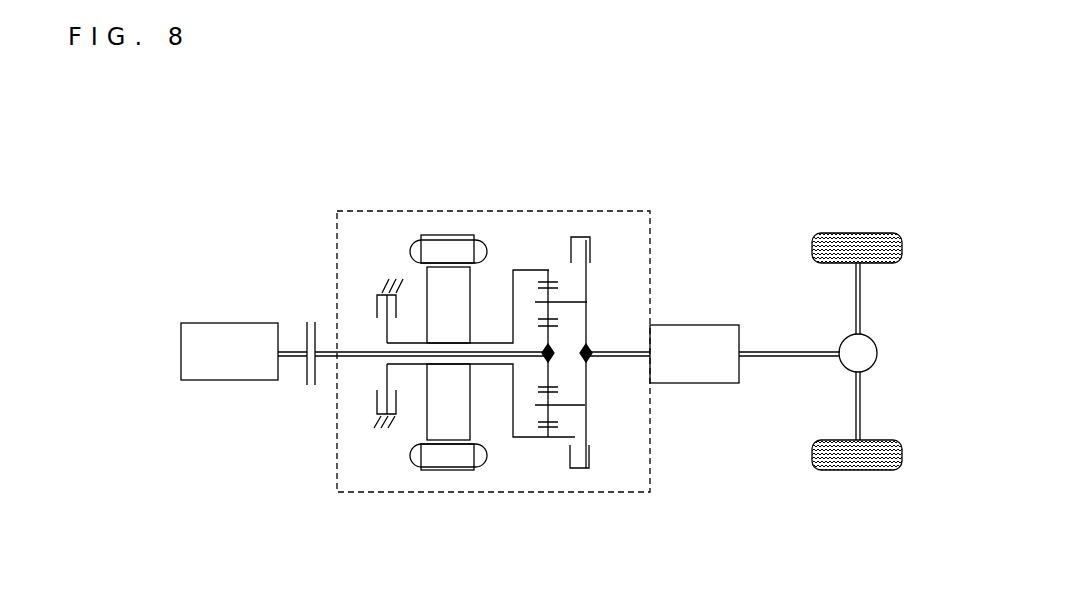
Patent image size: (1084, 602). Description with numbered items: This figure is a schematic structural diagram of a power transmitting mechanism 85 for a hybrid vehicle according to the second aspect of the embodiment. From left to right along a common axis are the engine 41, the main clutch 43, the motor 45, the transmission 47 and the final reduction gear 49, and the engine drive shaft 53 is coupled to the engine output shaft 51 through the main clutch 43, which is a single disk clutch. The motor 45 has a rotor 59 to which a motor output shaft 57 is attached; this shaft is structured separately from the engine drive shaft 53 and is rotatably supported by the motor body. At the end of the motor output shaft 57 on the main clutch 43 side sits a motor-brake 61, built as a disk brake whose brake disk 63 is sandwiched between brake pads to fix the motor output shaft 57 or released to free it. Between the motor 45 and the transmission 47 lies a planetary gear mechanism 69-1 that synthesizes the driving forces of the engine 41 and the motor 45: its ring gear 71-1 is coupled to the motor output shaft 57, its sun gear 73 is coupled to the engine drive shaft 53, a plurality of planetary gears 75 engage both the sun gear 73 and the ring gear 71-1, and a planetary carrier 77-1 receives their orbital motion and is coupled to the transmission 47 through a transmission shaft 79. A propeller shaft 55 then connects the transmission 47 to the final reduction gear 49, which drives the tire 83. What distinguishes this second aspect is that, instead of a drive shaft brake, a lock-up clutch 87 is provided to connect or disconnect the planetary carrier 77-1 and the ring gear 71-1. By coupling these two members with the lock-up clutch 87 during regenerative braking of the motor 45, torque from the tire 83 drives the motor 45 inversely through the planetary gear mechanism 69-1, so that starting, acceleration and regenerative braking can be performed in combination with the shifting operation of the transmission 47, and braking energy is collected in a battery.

The engine 41 is at (221, 328).
The engine output shaft 51 is at (298, 351).
The main clutch 43 is at (313, 322).
The engine drive shaft 53 is at (359, 357).
The power transmitting mechanism 85 is at (411, 180).
The motor-brake 61 is at (383, 270).
The brake disk 63 is at (380, 383).
The ring gear 71-1 is at (512, 297).
The motor 45 is at (446, 236).
The rotor 59 is at (447, 282).
The motor output shaft 57 is at (440, 365).
The planetary gears 75 is at (540, 287).
The sun gear 73 is at (537, 376).
The planetary gear mechanism 69-1 is at (573, 230).
The lock-up clutch 87 is at (598, 229).
The planetary carrier 77-1 is at (588, 418).
The transmission shaft 79 is at (622, 357).
The transmission 47 is at (692, 337).
The propeller shaft 55 is at (787, 352).
The final reduction gear 49 is at (868, 353).
The tire 83 is at (853, 245).